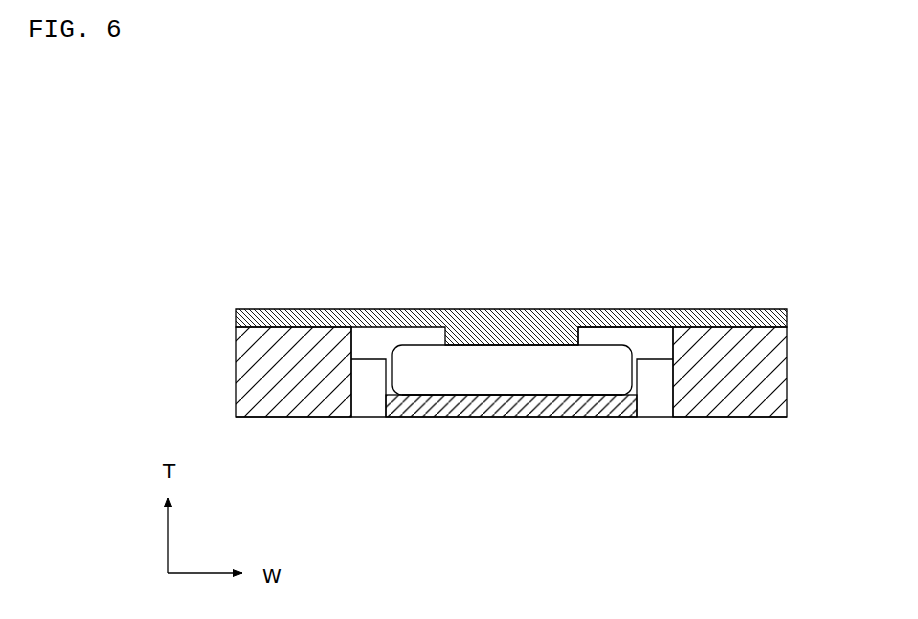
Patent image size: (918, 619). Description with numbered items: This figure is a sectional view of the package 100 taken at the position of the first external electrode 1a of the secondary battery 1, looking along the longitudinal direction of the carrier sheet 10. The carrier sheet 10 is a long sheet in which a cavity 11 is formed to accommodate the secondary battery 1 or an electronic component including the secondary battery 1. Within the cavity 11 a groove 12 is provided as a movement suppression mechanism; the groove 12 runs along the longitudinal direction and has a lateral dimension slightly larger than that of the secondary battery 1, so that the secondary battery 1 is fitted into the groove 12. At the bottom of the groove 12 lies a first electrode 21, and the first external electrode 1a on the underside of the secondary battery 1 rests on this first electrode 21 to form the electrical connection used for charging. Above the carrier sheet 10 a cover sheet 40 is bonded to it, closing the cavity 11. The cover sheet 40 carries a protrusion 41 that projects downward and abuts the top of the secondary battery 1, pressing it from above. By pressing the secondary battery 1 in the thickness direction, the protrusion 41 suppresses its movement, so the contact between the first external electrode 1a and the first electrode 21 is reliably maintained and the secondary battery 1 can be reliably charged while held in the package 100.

The package 100 is at (751, 248).
The carrier sheet 10 is at (723, 418).
The cavity 11 is at (656, 345).
The groove 12 is at (386, 356).
The secondary battery 1 is at (421, 331).
The first external electrode 1a is at (475, 377).
The first electrode 21 is at (545, 417).
The cover sheet 40 is at (288, 308).
The protrusion 41 is at (600, 327).